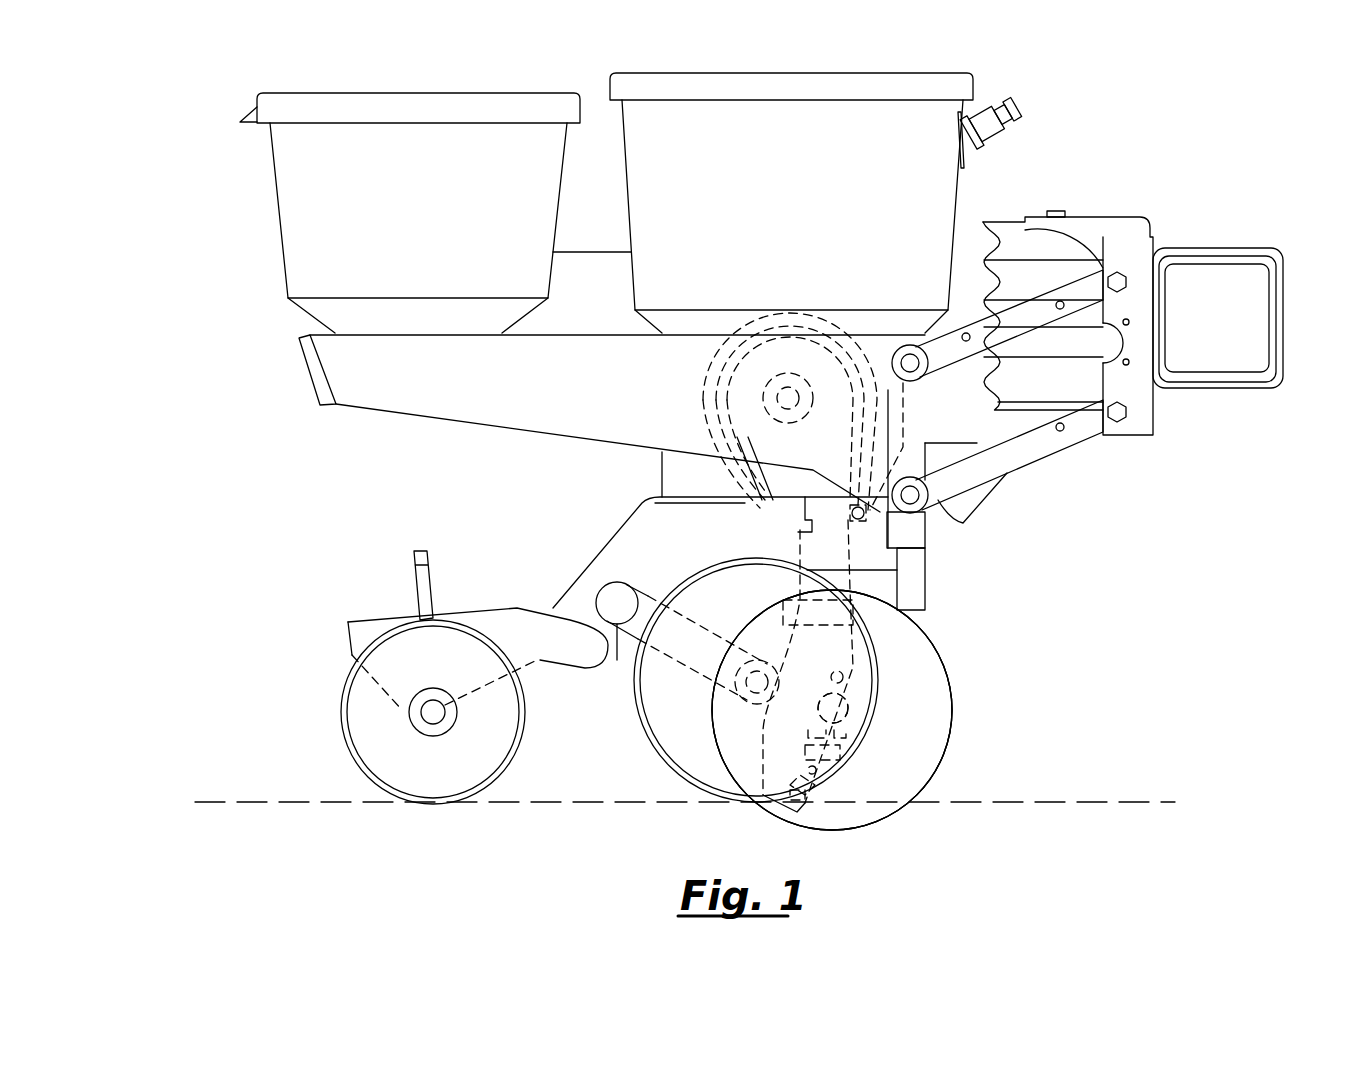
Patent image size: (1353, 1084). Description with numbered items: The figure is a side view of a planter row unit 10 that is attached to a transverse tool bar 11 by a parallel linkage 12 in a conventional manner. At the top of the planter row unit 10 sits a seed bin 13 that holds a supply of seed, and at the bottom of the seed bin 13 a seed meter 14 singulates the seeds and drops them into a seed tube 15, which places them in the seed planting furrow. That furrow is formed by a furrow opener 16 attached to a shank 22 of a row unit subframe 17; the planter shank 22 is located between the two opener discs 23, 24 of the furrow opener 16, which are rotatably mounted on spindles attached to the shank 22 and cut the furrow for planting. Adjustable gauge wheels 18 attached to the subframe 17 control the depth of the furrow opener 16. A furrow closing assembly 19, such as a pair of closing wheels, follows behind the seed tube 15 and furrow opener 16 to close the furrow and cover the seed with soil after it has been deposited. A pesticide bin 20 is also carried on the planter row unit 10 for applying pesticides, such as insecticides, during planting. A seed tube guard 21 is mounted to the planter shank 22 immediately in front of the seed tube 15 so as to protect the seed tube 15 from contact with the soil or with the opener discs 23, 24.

The planter row unit 10 is at (1140, 580).
The tool bar 11 is at (1237, 263).
The parallel linkage 12 is at (1052, 447).
The seed bin 13 is at (922, 200).
The seed meter 14 is at (750, 440).
The seed tube 15 is at (777, 750).
The furrow opener 16 is at (918, 775).
The row unit subframe 17 is at (615, 556).
The gauge wheels 18 is at (650, 738).
The furrow closing assembly 19 is at (373, 742).
The pesticide bin 20 is at (308, 237).
The seed tube guard 21 is at (800, 805).
The planter shank 22 is at (855, 690).
The opener disc 23 is at (877, 710).
The opener disc 24 is at (918, 660).